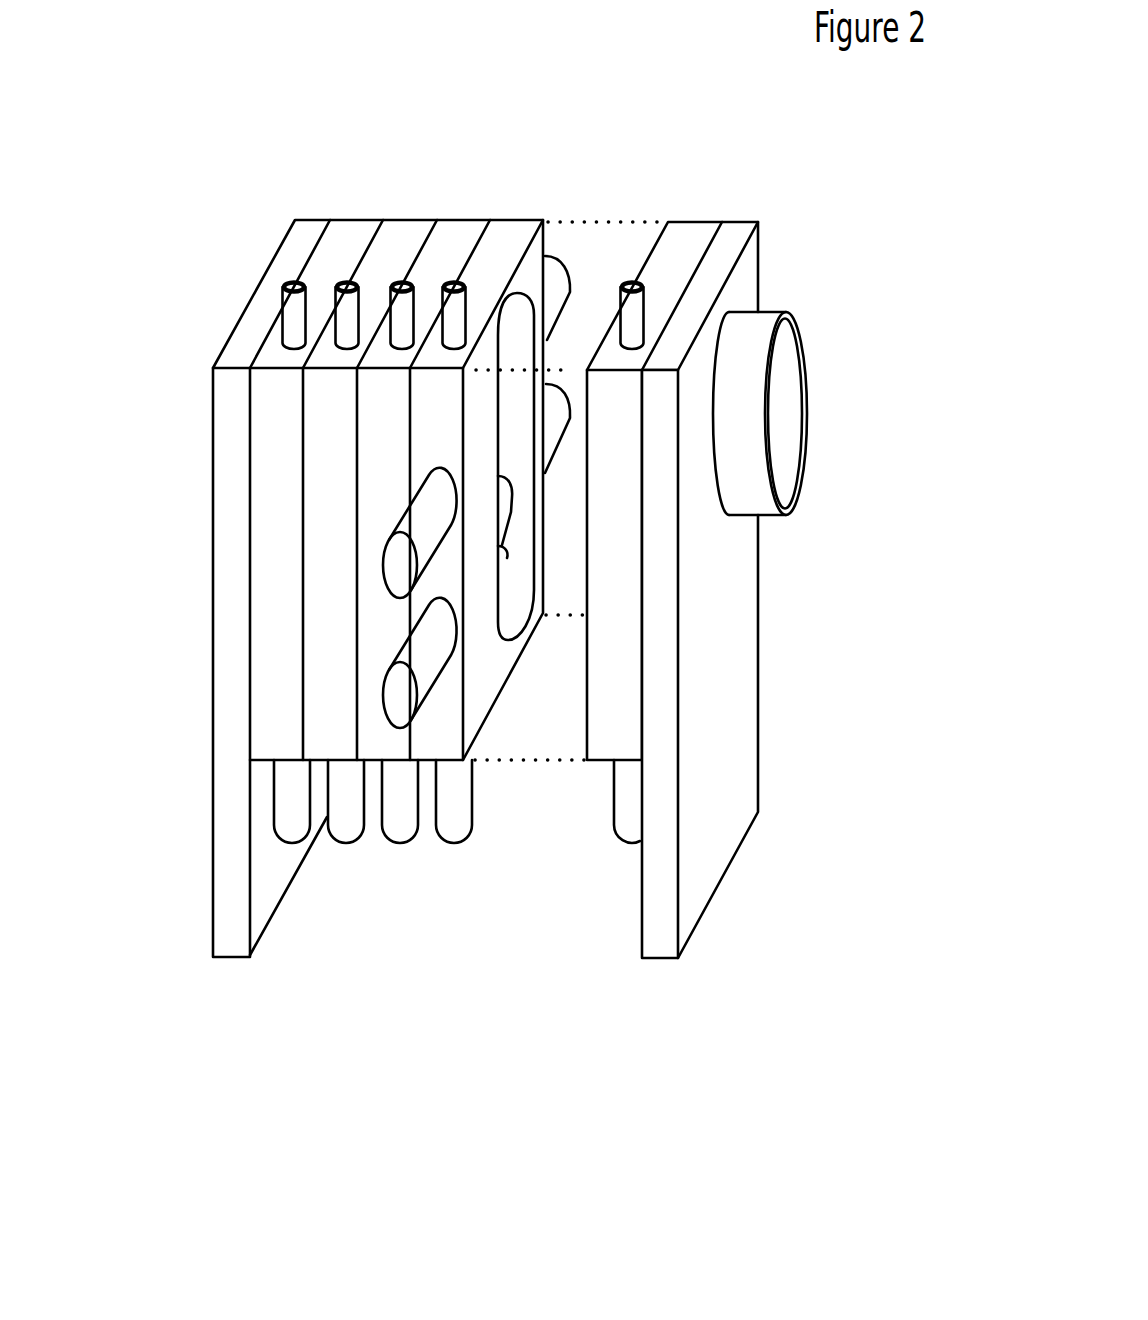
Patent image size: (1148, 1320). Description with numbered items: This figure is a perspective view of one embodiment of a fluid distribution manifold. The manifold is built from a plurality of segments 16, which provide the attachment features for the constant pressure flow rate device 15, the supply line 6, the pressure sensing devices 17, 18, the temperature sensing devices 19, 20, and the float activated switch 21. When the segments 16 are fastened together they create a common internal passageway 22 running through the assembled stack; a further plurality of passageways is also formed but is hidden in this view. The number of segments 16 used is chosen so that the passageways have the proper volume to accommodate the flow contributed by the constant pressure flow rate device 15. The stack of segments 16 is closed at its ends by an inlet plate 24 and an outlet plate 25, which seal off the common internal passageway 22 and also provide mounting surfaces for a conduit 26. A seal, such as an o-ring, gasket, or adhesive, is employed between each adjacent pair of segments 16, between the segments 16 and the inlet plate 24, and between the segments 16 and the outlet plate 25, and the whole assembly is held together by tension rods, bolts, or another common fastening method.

The supply line 6 is at (400, 281).
The constant pressure flow rate device 15 is at (407, 843).
The segments 16 is at (323, 600).
The pressure sensing device 17 is at (385, 542).
The pressure sensing device 18 is at (554, 258).
The temperature sensing device 19 is at (392, 724).
The temperature sensing device 20 is at (556, 386).
The float activated switch 21 is at (502, 548).
The common internal passageway 22 is at (516, 337).
The inlet plate 24 is at (717, 887).
The outlet plate 25 is at (213, 957).
The conduit 26 is at (797, 347).